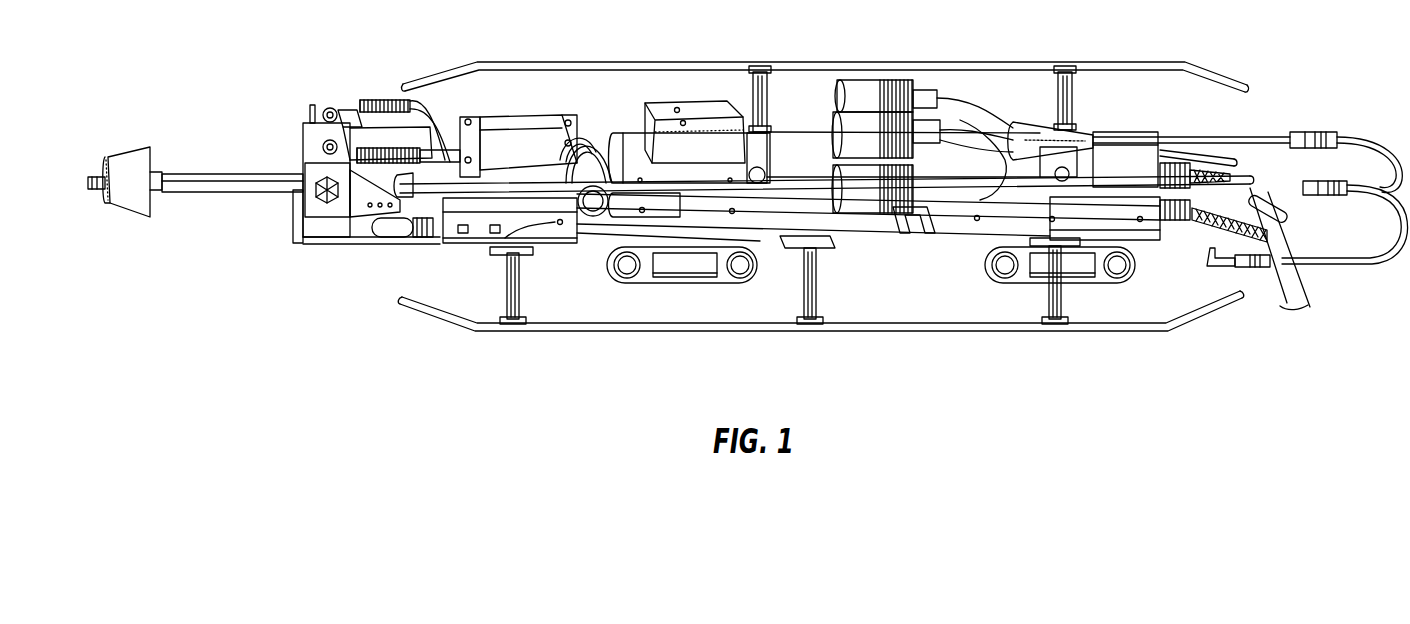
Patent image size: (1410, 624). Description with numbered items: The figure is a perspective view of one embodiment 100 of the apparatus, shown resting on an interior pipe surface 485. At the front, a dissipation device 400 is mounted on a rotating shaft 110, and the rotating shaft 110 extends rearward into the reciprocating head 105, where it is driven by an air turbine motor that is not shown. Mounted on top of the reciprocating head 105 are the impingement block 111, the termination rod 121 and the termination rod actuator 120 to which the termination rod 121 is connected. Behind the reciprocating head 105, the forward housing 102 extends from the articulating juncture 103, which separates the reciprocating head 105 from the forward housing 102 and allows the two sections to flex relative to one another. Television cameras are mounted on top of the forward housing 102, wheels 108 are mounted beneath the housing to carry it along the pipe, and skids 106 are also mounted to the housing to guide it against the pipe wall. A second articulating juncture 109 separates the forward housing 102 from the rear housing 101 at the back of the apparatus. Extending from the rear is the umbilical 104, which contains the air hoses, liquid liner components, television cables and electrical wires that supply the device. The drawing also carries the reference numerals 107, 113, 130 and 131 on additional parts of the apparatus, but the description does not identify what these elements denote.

The embodiment 100 is at (748, 207).
The rear housing 101 is at (1123, 254).
The forward housing 102 is at (868, 258).
The articulating juncture 103 is at (577, 229).
The umbilical 104 is at (1320, 256).
The reciprocating head 105 is at (495, 286).
The skids 106 is at (820, 347).
The rear track unit 107 is at (1060, 317).
The wheels 108 is at (682, 317).
The articulating juncture 109 is at (929, 264).
The rotating shaft 110 is at (232, 149).
The impingement block 111 is at (295, 132).
The head block 113 is at (364, 211).
The termination rod actuator 120 is at (518, 95).
The termination rod 121 is at (408, 97).
The motor housing 130 is at (690, 114).
The motor cylinders 131 is at (881, 113).
The dissipation device 400 is at (125, 216).
The interior pipe surface 485 is at (736, 365).